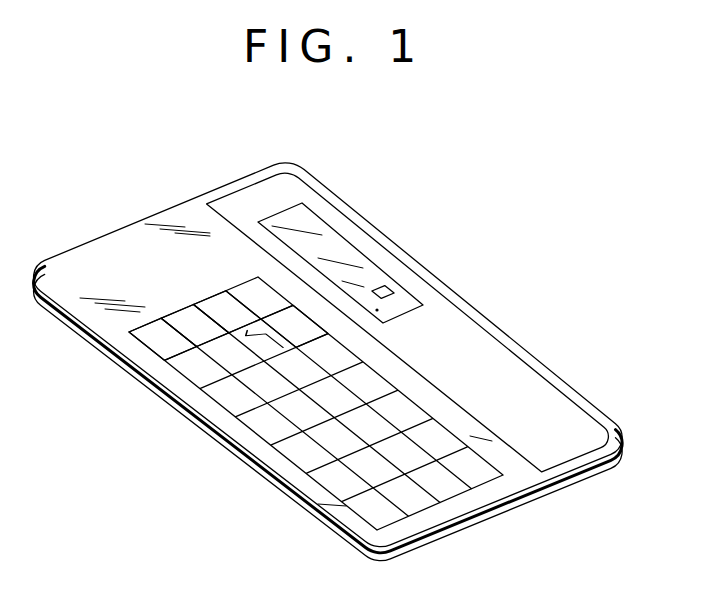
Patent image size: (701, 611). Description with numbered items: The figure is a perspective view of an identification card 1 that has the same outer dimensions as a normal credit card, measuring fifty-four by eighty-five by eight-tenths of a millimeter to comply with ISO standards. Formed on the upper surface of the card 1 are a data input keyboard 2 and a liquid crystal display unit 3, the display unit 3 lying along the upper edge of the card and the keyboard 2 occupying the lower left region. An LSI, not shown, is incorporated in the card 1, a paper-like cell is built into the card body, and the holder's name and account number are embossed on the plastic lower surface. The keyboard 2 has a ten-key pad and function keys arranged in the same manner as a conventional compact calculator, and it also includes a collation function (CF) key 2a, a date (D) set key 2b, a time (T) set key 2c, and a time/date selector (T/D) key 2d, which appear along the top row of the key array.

The identification card 1 is at (408, 224).
The data input keyboard 2 is at (256, 440).
The collation function (CF) key 2a is at (152, 343).
The date (D) set key 2b is at (178, 314).
The time (T) set key 2c is at (215, 302).
The time/date selector (T/D) key 2d is at (318, 328).
The liquid crystal display unit 3 is at (320, 230).